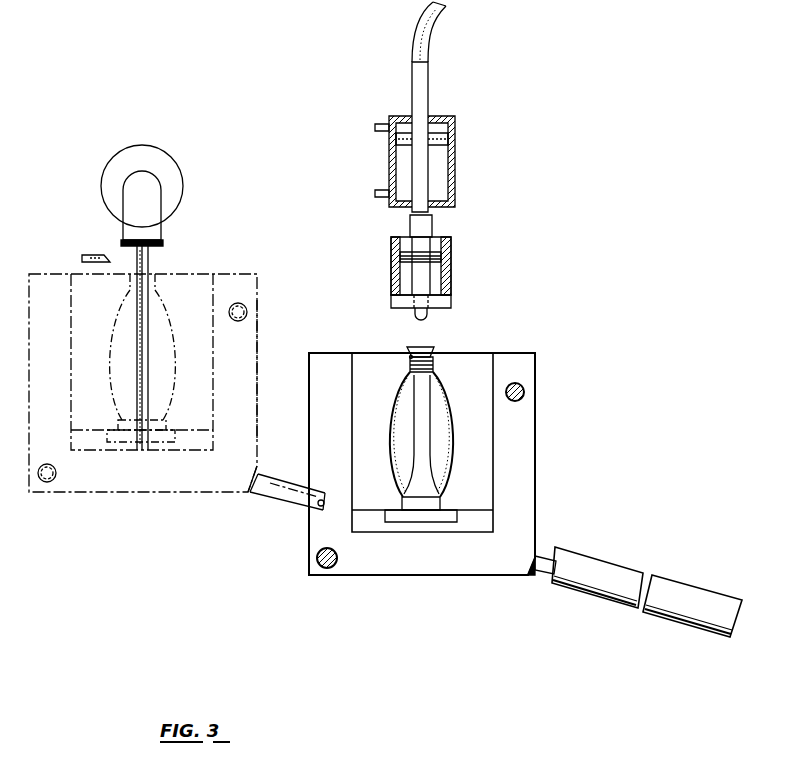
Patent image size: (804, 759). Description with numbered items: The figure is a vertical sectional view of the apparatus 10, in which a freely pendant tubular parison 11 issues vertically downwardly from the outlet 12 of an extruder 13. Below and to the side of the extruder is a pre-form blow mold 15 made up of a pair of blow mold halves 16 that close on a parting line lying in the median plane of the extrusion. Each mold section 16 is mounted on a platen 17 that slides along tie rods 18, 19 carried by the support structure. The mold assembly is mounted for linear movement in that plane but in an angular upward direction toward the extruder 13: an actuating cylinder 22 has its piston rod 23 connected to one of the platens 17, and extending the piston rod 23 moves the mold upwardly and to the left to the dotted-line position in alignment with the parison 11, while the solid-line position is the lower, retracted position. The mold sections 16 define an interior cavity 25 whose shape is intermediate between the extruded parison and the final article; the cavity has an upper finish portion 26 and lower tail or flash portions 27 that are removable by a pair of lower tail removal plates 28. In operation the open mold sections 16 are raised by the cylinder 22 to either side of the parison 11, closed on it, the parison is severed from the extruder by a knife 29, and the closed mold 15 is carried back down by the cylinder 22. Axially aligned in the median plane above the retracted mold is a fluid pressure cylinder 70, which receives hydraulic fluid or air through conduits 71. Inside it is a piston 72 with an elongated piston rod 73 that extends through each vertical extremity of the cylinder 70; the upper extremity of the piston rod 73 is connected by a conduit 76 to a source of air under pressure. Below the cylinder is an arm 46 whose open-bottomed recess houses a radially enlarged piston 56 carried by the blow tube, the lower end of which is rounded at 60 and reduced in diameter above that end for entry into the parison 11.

The apparatus 10 is at (237, 140).
The tubular parison 11 is at (150, 262).
The outlet 12 is at (160, 230).
The extruder 13 is at (172, 182).
The pre-form blow mold 15 is at (126, 498).
The blow mold halves 16 is at (208, 353).
The platen 17 is at (254, 376).
The tie rod 18 is at (46, 483).
The tie rod 19 is at (248, 312).
The actuating cylinder 22 is at (690, 598).
The piston rod 23 is at (262, 482).
The interior cavity 25 is at (116, 356).
The upper finish portion 26 is at (416, 350).
The tail portions 27 is at (411, 512).
The tail removal plates 28 is at (141, 436).
The knife 29 is at (98, 258).
The arm 46 is at (452, 243).
The piston 56 is at (441, 256).
The rounded end 60 is at (430, 318).
The fluid pressure cylinder 70 is at (463, 120).
The conduits 71 is at (378, 126).
The piston 72 is at (448, 142).
The piston rod 73 is at (427, 88).
The conduit 76 is at (433, 37).